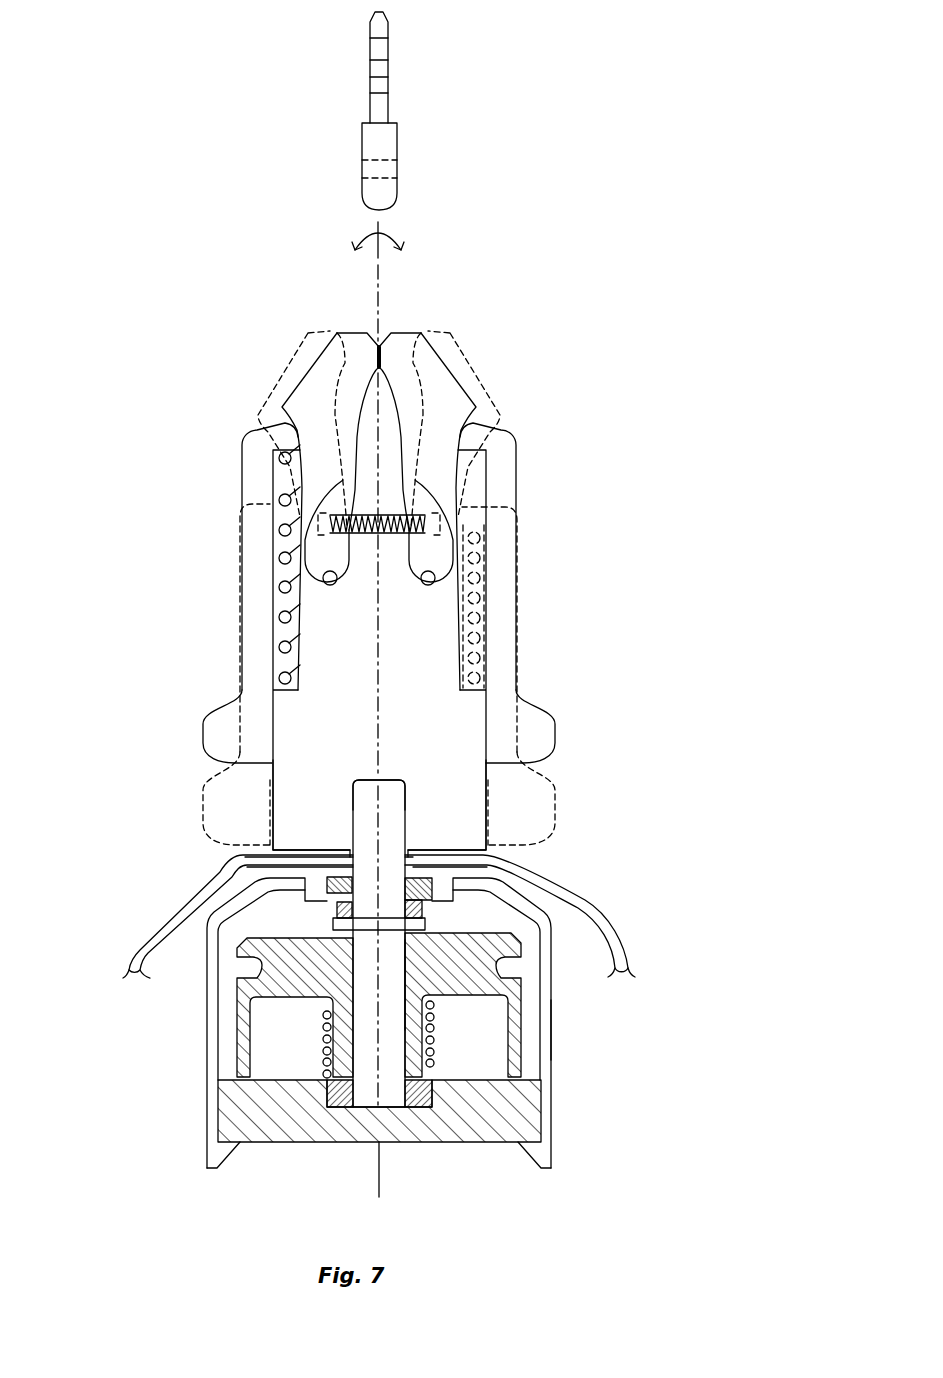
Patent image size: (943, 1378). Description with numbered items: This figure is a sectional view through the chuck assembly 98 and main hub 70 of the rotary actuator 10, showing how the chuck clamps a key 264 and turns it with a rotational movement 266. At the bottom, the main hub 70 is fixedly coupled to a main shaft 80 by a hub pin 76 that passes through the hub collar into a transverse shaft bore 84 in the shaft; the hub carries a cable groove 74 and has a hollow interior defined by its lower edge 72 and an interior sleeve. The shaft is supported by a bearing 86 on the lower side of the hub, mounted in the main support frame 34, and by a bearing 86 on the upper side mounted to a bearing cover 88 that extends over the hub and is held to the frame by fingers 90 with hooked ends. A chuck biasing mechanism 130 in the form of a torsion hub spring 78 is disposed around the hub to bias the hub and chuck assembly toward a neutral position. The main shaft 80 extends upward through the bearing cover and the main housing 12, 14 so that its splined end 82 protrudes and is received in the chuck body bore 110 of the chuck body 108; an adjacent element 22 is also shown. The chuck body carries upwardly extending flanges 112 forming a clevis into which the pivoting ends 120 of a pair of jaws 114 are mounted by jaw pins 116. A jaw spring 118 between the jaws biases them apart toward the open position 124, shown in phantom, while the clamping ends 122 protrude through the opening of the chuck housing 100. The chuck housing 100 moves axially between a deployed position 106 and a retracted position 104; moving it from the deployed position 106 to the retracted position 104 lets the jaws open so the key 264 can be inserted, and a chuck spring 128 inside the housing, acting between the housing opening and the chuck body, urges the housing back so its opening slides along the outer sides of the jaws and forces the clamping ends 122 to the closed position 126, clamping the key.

The rotary actuator 10 is at (727, 670).
The main housing 12 is at (405, 916).
The cover housing 14 is at (592, 914).
The cylindrical housing 22 is at (345, 850).
The main support frame 34 is at (464, 1143).
The main hub 70 is at (518, 1042).
The lower edge 72 is at (545, 1113).
The cable groove 74 is at (243, 965).
The hub pin 76 is at (328, 923).
The hub spring 78 is at (325, 1038).
The main shaft 80 is at (390, 983).
The splined end 82 is at (395, 808).
The shaft bore 84 is at (295, 888).
The bearing 86 is at (430, 892).
The bearing cover 88 is at (552, 1025).
The fingers 90 is at (210, 1168).
The chuck assembly 98 is at (637, 470).
The chuck housing 100 is at (444, 640).
The retracted position 104 is at (555, 720).
The deployed position 106 is at (553, 785).
The chuck body 108 is at (436, 714).
The chuck body bore 110 is at (357, 802).
The flanges 112 is at (323, 612).
The jaws 114 is at (374, 404).
The jaw pins 116 is at (325, 578).
The jaw spring 118 is at (417, 513).
The pivoting ends 120 is at (320, 548).
The clamping ends 122 is at (380, 358).
The open position 124 is at (290, 357).
The closed position 126 is at (402, 340).
The chuck spring 128 is at (285, 495).
The chuck biasing mechanism 130 is at (234, 1039).
The key 264 is at (388, 144).
The rotational movement 266 is at (408, 241).